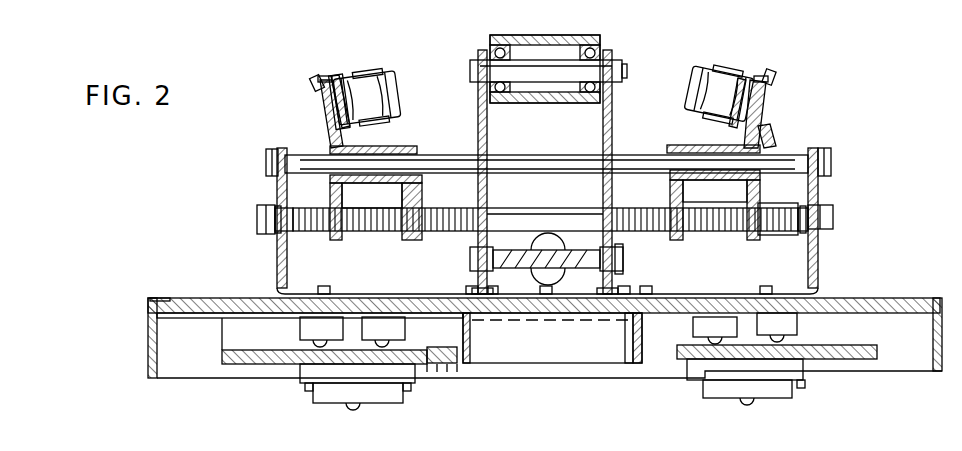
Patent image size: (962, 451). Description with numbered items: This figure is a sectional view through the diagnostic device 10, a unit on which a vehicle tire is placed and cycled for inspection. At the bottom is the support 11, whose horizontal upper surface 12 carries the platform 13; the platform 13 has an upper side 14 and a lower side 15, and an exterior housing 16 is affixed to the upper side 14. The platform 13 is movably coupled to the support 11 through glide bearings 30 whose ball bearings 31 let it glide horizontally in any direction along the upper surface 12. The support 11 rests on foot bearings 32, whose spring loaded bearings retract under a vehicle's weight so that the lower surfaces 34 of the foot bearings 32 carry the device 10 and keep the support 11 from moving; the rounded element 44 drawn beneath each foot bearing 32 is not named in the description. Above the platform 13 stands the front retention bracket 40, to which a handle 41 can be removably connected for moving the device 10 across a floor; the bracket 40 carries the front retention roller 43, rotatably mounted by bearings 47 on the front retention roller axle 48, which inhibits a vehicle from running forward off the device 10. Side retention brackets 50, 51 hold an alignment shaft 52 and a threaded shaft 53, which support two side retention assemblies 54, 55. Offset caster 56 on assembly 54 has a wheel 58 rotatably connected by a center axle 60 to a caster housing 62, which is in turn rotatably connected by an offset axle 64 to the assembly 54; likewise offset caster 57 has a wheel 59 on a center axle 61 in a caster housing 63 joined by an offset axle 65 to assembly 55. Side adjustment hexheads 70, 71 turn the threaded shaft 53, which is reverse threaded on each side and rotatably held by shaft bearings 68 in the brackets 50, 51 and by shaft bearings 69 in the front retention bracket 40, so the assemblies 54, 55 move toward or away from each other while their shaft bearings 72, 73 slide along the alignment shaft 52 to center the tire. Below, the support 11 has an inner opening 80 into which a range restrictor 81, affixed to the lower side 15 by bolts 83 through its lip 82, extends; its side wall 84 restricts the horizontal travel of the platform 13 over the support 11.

The diagnostic device 10 is at (112, 206).
The support 11 is at (223, 358).
The horizontal upper surface 12 is at (233, 345).
The platform 13 is at (158, 313).
The upper side 14 is at (170, 299).
The lower side 15 is at (183, 316).
The exterior housing 16 is at (150, 360).
The glide bearings 30 is at (298, 323).
The ball bearings 31 is at (315, 343).
The foot bearings 32 is at (398, 404).
The lower surfaces 34 is at (316, 404).
The front retention bracket 40 is at (602, 121).
The handle 41 is at (542, 269).
The front retention roller 43 is at (494, 40).
The bearing 44 is at (353, 409).
The bearings 47 is at (603, 47).
The front retention roller axle 48 is at (627, 70).
The side retention bracket 50 is at (819, 172).
The side retention bracket 51 is at (268, 178).
The alignment shaft 52 is at (790, 154).
The threaded shaft 53 is at (780, 233).
The side retention assembly 54 is at (775, 130).
The side retention assembly 55 is at (322, 126).
The offset caster 56 is at (760, 80).
The offset caster 57 is at (360, 72).
The wheel 58 is at (689, 92).
The wheel 59 is at (399, 86).
The center axle 60 is at (711, 70).
The center axle 61 is at (378, 72).
The caster housing 62 is at (740, 78).
The caster housing 63 is at (340, 76).
The offset axle 64 is at (774, 80).
The offset axle 65 is at (311, 79).
The shaft bearings 68 is at (276, 208).
The shaft bearings 69 is at (602, 203).
The side adjustment hexhead 70 is at (834, 216).
The side adjustment hexhead 71 is at (257, 219).
The shaft bearings 72 is at (674, 145).
The shaft bearings 73 is at (405, 146).
The inner opening 80 is at (432, 366).
The range restrictor 81 is at (560, 347).
The lip 82 is at (632, 321).
The bolts 83 is at (478, 292).
The side wall 84 is at (455, 366).